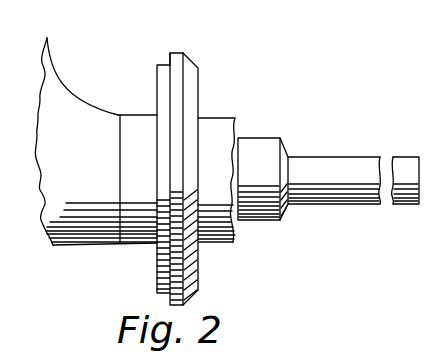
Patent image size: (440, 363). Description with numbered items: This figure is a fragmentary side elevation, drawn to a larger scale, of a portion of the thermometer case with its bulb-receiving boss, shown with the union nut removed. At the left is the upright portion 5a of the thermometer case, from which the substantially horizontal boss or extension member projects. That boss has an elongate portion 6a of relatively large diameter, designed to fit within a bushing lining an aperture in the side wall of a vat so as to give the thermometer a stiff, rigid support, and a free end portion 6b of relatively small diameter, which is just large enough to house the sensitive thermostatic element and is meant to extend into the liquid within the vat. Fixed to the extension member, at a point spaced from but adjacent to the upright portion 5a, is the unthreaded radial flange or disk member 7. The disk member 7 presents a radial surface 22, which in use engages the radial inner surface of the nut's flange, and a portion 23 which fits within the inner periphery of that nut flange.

The upright portion of the case 5a is at (60, 78).
The radial surface of the flange 22 is at (170, 60).
The flange or disk member 7 is at (178, 53).
The portion of the flange 23 is at (165, 77).
The elongate portion of relatively large diameter 6a is at (260, 140).
The free end portion 6b is at (390, 129).